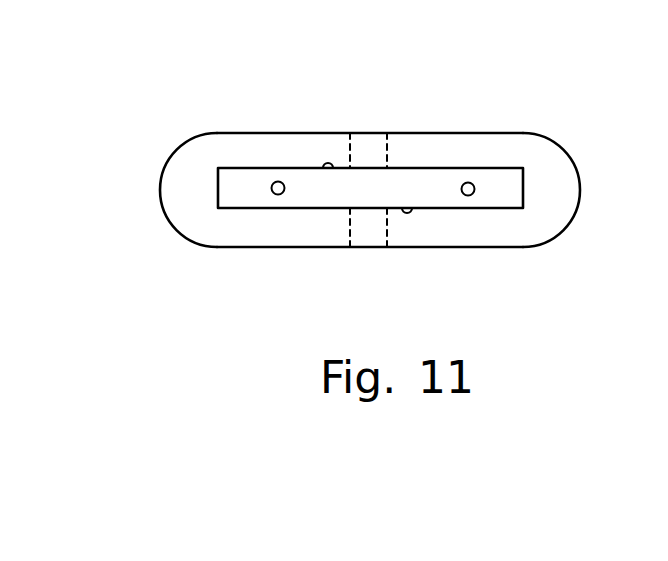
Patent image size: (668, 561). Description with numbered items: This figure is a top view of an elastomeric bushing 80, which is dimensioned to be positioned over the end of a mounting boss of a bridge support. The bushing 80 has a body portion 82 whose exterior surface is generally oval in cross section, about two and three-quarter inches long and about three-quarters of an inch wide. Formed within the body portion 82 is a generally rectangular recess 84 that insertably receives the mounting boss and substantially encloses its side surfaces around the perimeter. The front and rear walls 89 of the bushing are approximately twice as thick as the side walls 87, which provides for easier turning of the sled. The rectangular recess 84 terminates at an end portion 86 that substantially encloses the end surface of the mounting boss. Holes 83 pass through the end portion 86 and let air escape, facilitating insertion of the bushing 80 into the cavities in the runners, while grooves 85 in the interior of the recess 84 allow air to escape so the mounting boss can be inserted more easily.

The elastomeric bushing 80 is at (358, 182).
The body portion 82 is at (578, 152).
The holes 83 is at (478, 184).
The rectangular recess 84 is at (370, 190).
The grooves 85 is at (329, 162).
The end portion 86 is at (300, 192).
The side walls 87 is at (256, 140).
The front and rear walls 89 is at (188, 187).